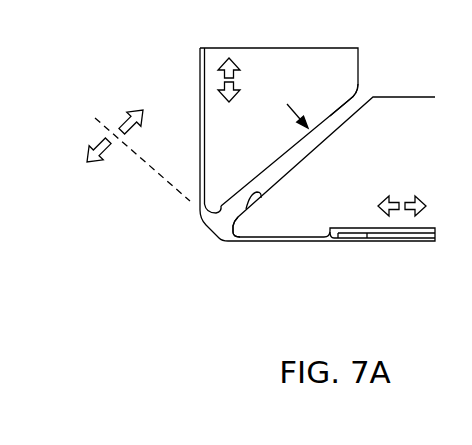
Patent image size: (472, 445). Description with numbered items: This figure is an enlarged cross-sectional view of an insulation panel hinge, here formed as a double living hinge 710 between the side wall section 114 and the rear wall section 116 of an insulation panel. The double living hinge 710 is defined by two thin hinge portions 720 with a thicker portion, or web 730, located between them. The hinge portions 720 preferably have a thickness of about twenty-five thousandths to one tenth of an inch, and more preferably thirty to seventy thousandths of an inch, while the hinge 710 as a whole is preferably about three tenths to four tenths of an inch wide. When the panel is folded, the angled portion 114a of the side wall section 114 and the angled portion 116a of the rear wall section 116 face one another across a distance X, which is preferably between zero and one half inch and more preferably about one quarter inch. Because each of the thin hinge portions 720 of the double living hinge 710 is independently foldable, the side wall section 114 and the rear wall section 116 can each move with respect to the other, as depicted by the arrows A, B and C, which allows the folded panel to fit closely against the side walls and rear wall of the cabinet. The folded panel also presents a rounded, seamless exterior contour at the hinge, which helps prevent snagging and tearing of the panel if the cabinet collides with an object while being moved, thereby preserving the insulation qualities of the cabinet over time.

The rear wall section 116 is at (200, 127).
The angled portion of rear wall section 116a is at (353, 93).
The side wall section 114 is at (308, 242).
The angled portion of side wall section 114a is at (255, 200).
The double living hinge 710 is at (146, 269).
The hinge portions 720 is at (200, 217).
The web 730 is at (200, 237).
The arrow A is at (421, 246).
The arrow B is at (258, 62).
The arrow C is at (87, 104).
The distance X is at (329, 155).